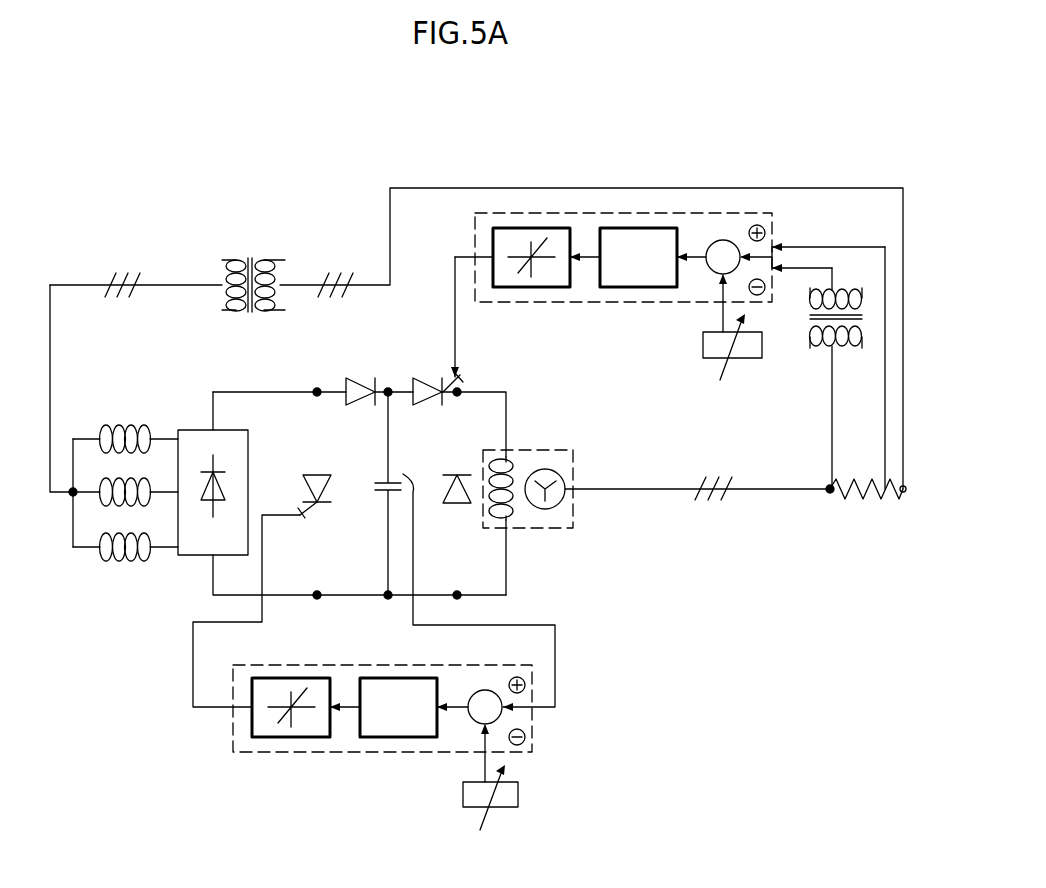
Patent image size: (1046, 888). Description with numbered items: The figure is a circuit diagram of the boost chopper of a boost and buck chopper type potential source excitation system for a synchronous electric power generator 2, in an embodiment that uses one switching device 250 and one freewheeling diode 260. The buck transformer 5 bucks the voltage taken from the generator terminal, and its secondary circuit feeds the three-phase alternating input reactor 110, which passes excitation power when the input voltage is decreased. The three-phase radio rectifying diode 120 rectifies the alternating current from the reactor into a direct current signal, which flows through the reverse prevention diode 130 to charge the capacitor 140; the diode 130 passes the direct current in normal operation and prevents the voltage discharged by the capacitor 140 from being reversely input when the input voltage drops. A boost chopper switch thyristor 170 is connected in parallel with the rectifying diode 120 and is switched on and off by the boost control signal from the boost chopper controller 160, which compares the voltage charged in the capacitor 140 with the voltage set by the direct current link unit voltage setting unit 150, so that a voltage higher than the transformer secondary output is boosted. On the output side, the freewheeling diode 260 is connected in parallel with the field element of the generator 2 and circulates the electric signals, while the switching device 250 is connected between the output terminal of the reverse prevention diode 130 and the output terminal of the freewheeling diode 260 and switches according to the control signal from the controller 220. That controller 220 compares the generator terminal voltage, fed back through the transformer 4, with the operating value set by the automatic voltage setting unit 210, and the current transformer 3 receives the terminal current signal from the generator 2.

The electric power generator 2 is at (555, 450).
The current transformer 3 is at (862, 500).
The transformer 4 is at (812, 323).
The buck transformer 5 is at (252, 266).
The three-phase alternating input reactor 110 is at (73, 525).
The three-phase radio rectifying diode 120 is at (236, 428).
The reverse prevention diode 130 is at (346, 380).
The capacitor 140 is at (375, 483).
The direct current link unit voltage setting unit 150 is at (518, 795).
The boost chopper controller 160 is at (532, 683).
The thyristor 170 is at (332, 502).
The automatic voltage setting unit 210 is at (703, 345).
The boost chopper controller 220 is at (710, 212).
The switching device 250 is at (462, 380).
The freewheeling diode 260 is at (447, 475).